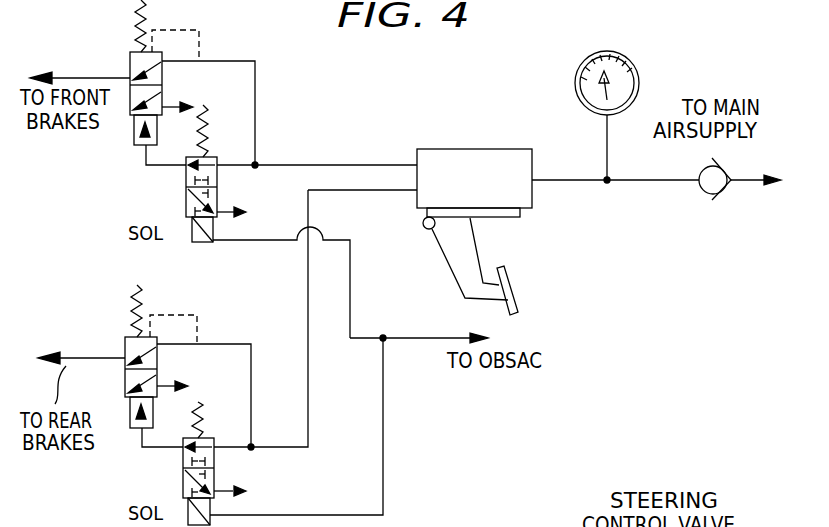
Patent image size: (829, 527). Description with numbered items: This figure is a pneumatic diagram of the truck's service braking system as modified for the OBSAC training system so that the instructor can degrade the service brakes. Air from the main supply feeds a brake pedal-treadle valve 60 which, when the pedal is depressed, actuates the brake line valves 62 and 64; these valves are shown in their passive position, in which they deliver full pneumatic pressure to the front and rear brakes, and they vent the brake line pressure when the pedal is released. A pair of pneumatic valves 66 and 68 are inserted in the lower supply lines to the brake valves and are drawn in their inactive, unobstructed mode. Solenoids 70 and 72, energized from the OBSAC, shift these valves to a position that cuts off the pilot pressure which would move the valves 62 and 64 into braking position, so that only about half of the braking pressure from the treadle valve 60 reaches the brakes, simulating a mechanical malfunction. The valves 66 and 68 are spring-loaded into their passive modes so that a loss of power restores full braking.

The brake pedal-treadle valve 60 is at (489, 190).
The brake line valve 62 is at (130, 107).
The brake line valve 64 is at (125, 350).
The pneumatic valve 66 is at (301, 173).
The pneumatic valve 68 is at (237, 463).
The solenoid 70 is at (213, 231).
The solenoid 72 is at (214, 481).